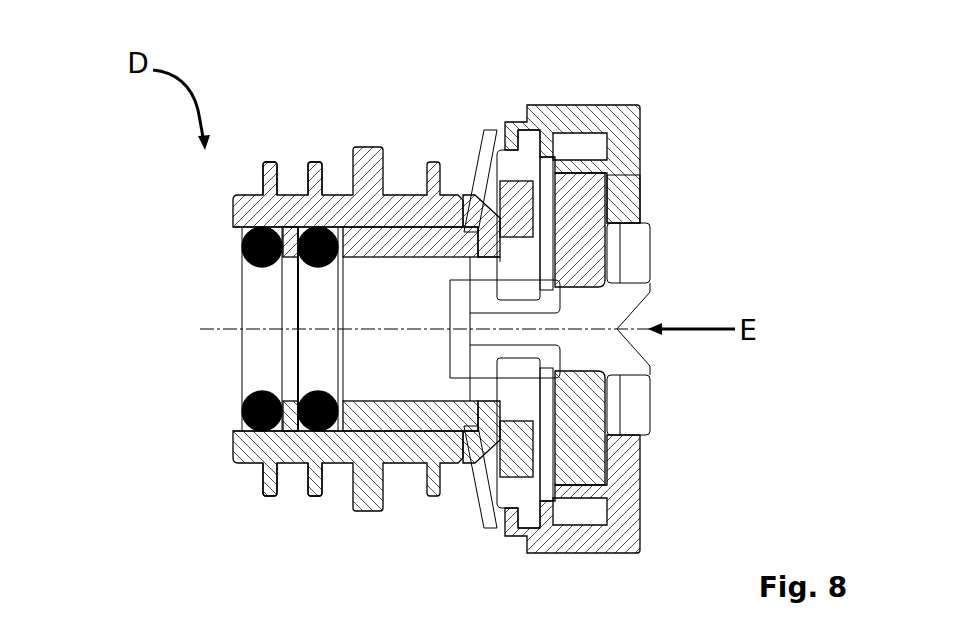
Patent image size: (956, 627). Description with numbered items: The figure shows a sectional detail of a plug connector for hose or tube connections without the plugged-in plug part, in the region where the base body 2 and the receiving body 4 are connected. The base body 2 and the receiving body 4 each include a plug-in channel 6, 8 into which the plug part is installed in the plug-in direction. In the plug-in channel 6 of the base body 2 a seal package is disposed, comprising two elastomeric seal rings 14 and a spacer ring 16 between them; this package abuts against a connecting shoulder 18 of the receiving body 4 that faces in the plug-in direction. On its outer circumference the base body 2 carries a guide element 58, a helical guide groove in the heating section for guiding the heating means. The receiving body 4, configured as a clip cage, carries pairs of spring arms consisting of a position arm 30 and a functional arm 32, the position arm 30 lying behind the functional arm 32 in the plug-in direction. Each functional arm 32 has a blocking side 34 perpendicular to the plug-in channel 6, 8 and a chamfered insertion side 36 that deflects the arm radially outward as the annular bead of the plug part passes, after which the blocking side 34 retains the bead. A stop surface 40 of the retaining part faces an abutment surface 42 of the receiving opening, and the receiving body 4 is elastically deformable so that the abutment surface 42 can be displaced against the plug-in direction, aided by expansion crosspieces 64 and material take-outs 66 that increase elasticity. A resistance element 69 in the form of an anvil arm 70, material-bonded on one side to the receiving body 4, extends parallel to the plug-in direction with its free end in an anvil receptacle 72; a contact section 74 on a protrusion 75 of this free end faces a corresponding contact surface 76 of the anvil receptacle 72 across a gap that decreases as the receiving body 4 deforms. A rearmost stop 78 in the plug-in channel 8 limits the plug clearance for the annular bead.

The base body 2 is at (260, 208).
The receiving body 4 is at (618, 318).
The plug-in channel 6 is at (252, 365).
The plug-in channel 8 is at (597, 320).
The seal rings 14 is at (253, 433).
The spacer ring 16 is at (292, 240).
The connecting shoulder 18 is at (353, 428).
The position arm 30 is at (503, 198).
The functional arm 32 is at (573, 200).
The blocking side 34 is at (552, 208).
The insertion side 36 is at (608, 236).
The stop surface 40 is at (705, 180).
The abutment surface 42 is at (607, 200).
The guide element 58 is at (272, 167).
The expansion crosspiece 64 is at (573, 105).
The material take-out 66 is at (620, 332).
The resistance element 69 is at (665, 329).
The anvil arm 70 is at (583, 410).
The anvil receptacle 72 is at (502, 300).
The contact section 74 is at (502, 342).
The protrusion 75 is at (480, 300).
The contact surface 76 is at (503, 370).
The rearmost stop 78 is at (493, 240).